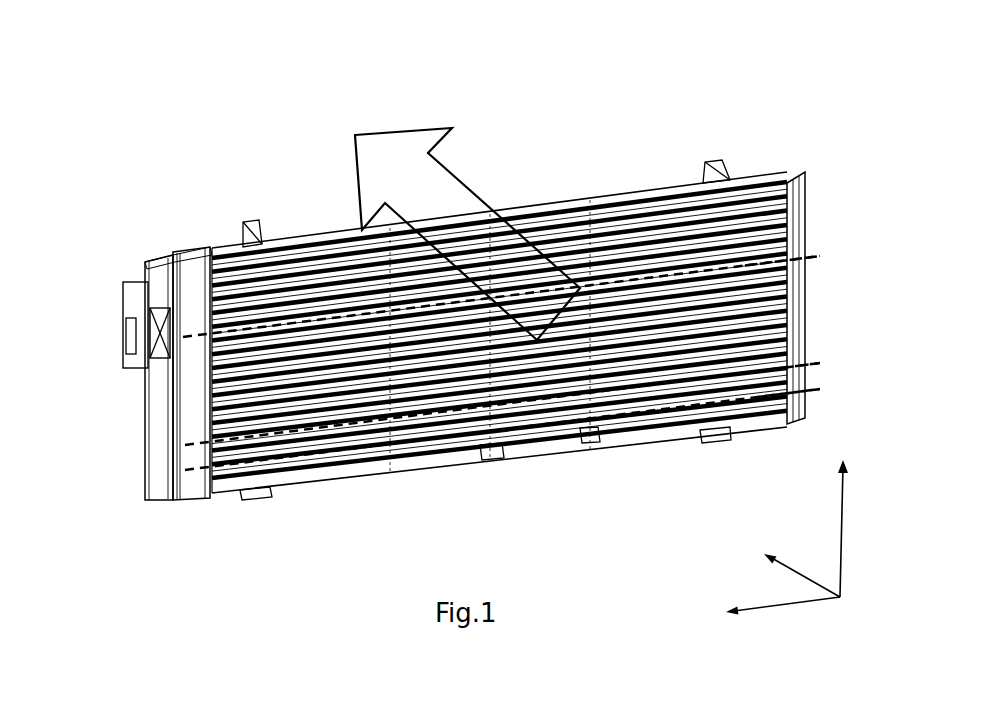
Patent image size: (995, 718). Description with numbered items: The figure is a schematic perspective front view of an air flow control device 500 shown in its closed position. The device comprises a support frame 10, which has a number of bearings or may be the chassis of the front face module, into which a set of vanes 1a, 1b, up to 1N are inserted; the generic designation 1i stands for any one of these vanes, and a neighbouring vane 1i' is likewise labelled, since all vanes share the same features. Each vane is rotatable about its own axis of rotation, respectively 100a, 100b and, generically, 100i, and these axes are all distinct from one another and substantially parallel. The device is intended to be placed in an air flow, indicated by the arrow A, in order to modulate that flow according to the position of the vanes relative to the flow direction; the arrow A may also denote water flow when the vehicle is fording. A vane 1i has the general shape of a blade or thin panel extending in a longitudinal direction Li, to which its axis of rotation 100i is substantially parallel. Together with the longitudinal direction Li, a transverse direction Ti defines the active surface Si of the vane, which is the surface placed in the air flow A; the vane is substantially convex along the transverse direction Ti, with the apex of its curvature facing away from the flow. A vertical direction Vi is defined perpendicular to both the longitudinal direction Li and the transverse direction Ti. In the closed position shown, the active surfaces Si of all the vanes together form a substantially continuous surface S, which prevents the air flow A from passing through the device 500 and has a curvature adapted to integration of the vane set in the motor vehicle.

The air flow control device 500 is at (618, 130).
The support frame 10 is at (793, 290).
The vane 1N is at (239, 266).
The vane 1i is at (432, 296).
The tube i prime 1i' is at (499, 223).
The vane 1a is at (247, 468).
The vane 1b is at (215, 445).
The axis of rotation 100i is at (747, 265).
The axis of rotation 100b is at (757, 373).
The axis of rotation 100a is at (760, 396).
The active surface Si is at (283, 308).
The substantially continuous surface S is at (335, 372).
The air flow A is at (467, 234).
The vertical direction Vi is at (840, 507).
The transverse direction Ti is at (790, 557).
The longitudinal direction Li is at (766, 612).